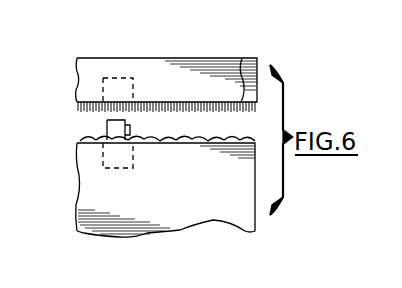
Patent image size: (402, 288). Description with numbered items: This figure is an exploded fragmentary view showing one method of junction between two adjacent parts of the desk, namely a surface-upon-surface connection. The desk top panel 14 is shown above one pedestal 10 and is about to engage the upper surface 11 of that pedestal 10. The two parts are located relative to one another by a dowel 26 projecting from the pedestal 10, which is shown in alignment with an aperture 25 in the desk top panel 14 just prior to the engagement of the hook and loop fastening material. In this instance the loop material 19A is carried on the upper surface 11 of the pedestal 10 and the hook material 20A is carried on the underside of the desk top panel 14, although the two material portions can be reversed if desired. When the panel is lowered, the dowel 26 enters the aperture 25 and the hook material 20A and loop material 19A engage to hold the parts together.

The pedestal 10 is at (140, 245).
The upper surface 11 is at (200, 143).
The desk top panel 14 is at (177, 53).
The loop material 19A is at (240, 143).
The hook material 20A is at (242, 58).
The aperture 25 is at (121, 76).
The dowel 26 is at (128, 125).